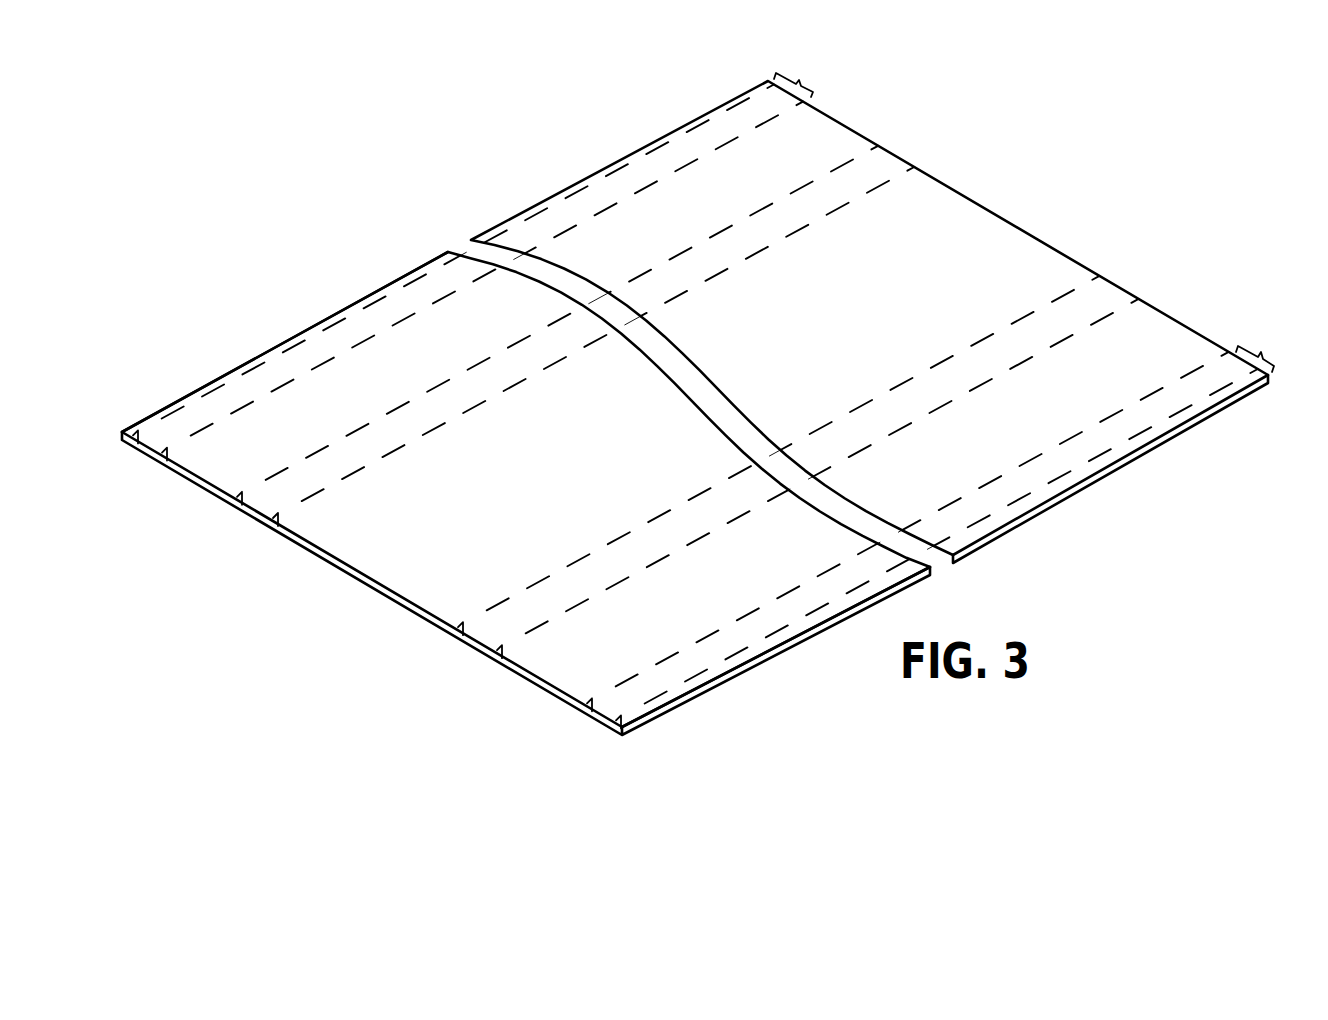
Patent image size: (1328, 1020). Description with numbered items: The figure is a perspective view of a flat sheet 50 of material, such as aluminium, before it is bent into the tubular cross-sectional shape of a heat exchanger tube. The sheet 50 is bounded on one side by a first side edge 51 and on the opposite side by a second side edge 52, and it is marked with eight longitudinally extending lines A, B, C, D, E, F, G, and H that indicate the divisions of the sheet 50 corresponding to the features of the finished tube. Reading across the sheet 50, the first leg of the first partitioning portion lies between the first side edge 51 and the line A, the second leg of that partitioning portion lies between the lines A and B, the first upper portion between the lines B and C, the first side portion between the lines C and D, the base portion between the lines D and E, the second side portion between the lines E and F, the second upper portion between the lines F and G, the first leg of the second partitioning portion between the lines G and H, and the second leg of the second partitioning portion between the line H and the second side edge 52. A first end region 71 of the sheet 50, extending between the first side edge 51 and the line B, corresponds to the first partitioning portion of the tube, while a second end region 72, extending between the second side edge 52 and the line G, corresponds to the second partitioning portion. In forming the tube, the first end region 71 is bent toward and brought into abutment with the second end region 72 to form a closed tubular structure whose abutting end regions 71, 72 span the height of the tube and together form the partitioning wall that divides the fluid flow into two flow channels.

The sheet 50 is at (331, 242).
The first side edge 51 is at (285, 340).
The second side edge 52 is at (757, 659).
The first end region 71 is at (803, 75).
The second end region 72 is at (1265, 350).
The line A is at (138, 443).
The line B is at (167, 461).
The line C is at (242, 505).
The line D is at (278, 526).
The line E is at (463, 635).
The line F is at (502, 658).
The line G is at (592, 711).
The line H is at (621, 728).